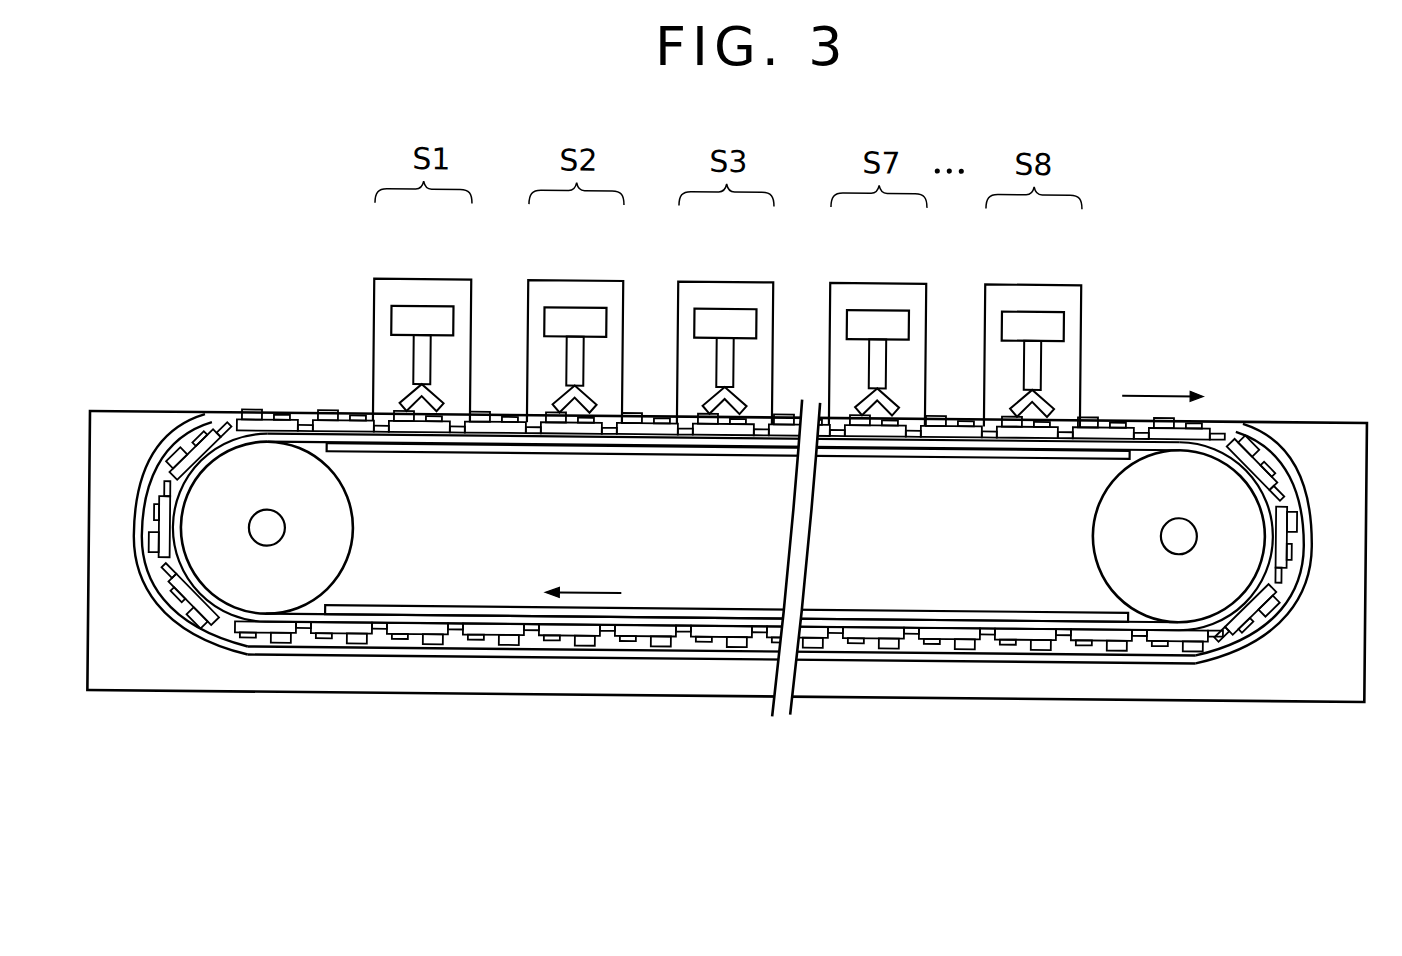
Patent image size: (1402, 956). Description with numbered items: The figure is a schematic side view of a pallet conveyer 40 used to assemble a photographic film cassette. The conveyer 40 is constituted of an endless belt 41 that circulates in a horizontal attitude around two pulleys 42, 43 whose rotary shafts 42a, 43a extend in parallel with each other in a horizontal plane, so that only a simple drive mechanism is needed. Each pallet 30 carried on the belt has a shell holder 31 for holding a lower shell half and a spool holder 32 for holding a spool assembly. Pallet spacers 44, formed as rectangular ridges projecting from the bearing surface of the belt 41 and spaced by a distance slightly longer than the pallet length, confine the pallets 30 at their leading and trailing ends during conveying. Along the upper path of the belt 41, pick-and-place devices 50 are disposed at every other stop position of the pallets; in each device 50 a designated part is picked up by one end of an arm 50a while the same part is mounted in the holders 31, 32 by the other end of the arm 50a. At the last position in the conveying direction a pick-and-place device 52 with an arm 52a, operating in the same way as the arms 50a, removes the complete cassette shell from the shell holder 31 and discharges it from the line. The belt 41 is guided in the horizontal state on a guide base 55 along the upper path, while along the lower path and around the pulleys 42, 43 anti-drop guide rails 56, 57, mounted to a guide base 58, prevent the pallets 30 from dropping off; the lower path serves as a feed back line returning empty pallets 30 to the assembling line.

The pallet 30 is at (305, 400).
The shell holder 31 is at (327, 407).
The spool holder 32 is at (358, 412).
The pallet conveyer 40 is at (1093, 396).
The endless belt 41 is at (560, 434).
The pulley 42 is at (347, 525).
The rotary shaft 42a is at (256, 545).
The pulley 43 is at (1098, 533).
The rotary shaft 43a is at (1171, 545).
The pallet spacer 44 is at (535, 426).
The pick-and-place device 50 is at (427, 284).
The arm 50a is at (430, 357).
The pick-and-place device 52 is at (1036, 284).
The arm 52a is at (1041, 351).
The guide base 55 is at (372, 442).
The anti-drop guide rail 56 is at (605, 654).
The anti-drop guide rail 57 is at (152, 596).
The guide base 58 is at (674, 606).